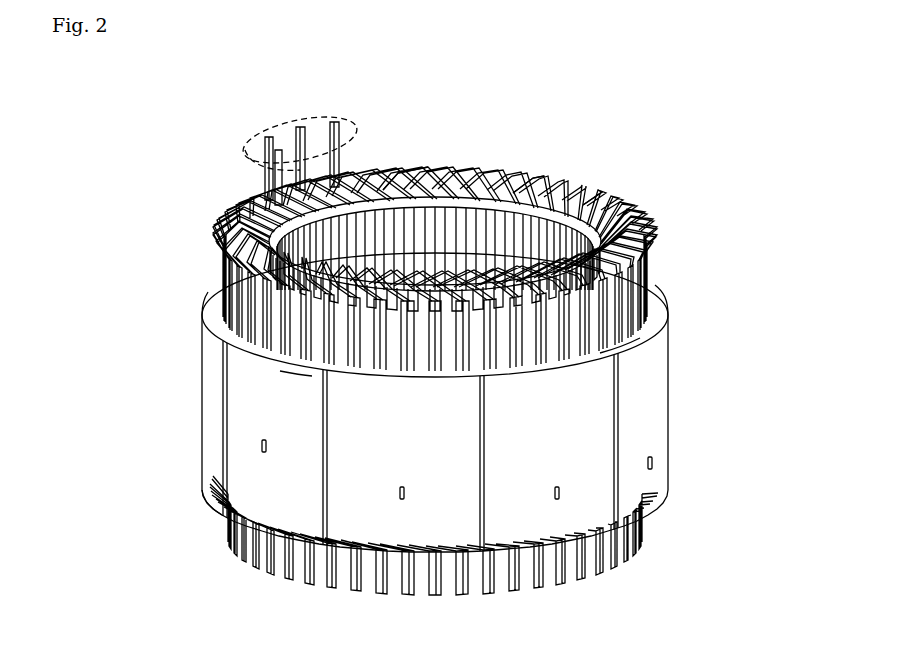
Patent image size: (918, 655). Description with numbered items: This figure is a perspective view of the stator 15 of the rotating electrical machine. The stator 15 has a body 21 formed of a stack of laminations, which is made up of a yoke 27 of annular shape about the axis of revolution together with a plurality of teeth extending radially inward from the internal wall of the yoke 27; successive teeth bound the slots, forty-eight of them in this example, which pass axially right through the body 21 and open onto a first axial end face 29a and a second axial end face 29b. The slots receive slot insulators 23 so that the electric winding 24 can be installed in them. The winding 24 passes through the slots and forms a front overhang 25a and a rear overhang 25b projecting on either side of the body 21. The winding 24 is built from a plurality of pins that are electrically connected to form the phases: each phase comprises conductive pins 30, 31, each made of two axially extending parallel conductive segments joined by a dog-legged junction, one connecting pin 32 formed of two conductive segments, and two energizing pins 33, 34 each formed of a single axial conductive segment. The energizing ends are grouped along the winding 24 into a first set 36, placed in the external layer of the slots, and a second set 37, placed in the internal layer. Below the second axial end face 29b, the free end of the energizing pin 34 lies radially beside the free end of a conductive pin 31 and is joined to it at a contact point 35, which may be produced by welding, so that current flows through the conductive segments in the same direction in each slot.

The stator 15 is at (662, 168).
The body 21 is at (643, 400).
The slot insulators 23 is at (300, 375).
The electric winding 24 is at (445, 160).
The front overhang 25a is at (226, 246).
The rear overhang 25b is at (238, 545).
The yoke 27 is at (655, 300).
The first axial end face 29a is at (200, 296).
The second axial end face 29b is at (228, 498).
The conductive pin 30 is at (530, 176).
The conductive pin 31 is at (589, 192).
The connecting pin 32 is at (396, 166).
The energizing pin 33 is at (603, 352).
The energizing pin 34 is at (650, 240).
The contact point 35 is at (640, 565).
The first set 36 is at (288, 120).
The second set 37 is at (255, 170).